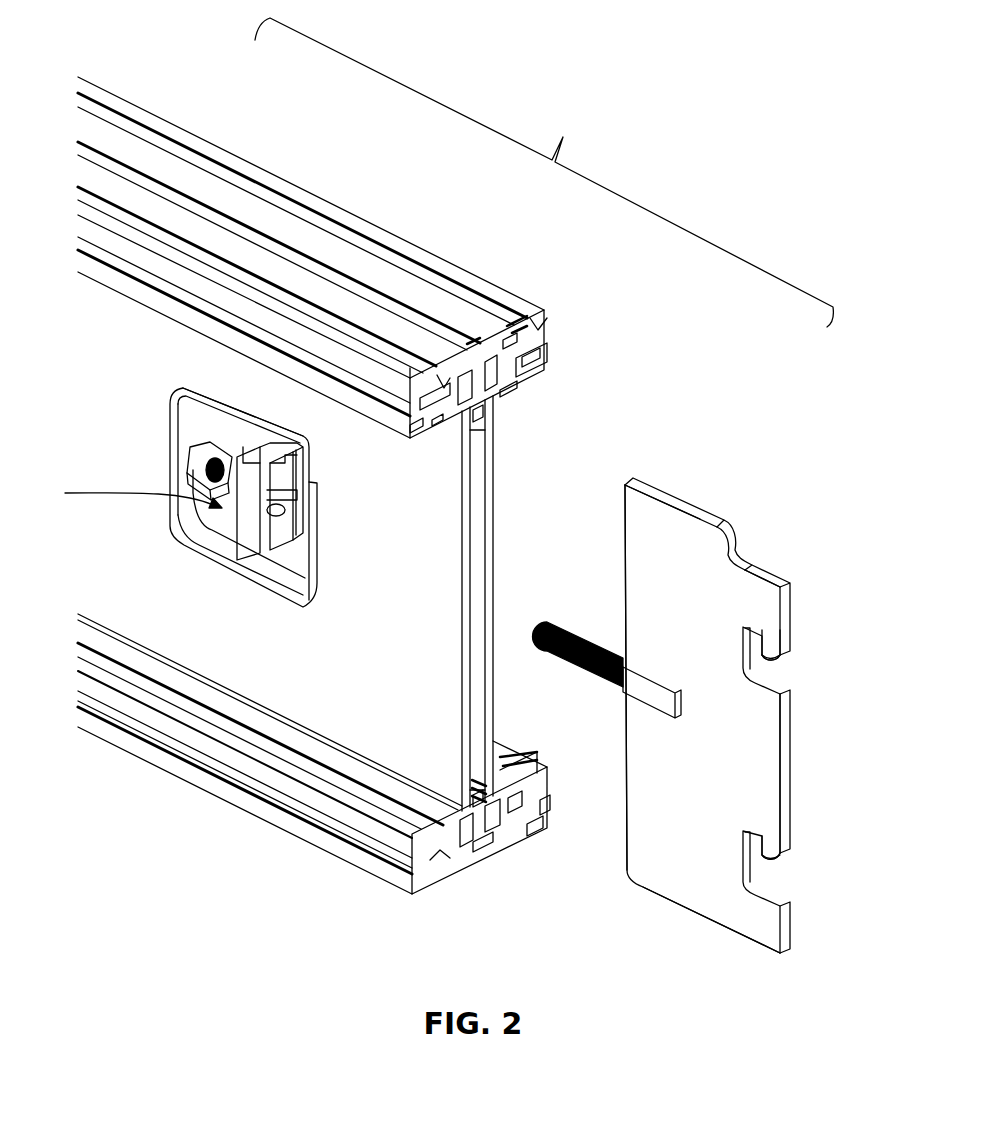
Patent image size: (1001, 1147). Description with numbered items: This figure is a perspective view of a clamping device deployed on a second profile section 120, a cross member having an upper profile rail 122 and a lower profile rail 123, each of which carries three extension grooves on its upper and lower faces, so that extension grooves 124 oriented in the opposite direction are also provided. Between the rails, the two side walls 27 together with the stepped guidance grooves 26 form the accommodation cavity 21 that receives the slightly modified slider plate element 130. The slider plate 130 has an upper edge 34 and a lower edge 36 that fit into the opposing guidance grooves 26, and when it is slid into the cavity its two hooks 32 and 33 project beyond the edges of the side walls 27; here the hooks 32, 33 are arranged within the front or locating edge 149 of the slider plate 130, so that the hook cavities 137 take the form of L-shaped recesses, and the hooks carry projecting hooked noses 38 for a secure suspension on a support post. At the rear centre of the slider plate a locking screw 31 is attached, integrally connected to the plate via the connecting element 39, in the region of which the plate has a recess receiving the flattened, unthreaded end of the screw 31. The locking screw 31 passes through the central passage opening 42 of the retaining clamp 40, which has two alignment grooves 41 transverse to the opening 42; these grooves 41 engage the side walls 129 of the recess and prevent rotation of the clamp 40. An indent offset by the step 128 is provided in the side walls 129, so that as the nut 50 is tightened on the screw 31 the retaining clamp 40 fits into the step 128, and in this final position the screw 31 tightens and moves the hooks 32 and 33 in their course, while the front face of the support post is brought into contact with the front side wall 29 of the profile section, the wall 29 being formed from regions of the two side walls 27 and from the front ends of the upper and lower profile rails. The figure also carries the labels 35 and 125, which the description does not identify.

The accommodation cavity 21 is at (482, 456).
The stepped guidance groove 26 is at (495, 404).
The side walls 27 is at (445, 580).
The front side wall 29 is at (500, 586).
The locking screw 31 is at (582, 668).
The hook 32 is at (773, 648).
The hook 33 is at (758, 857).
The upper edge 34 is at (698, 675).
The arm 35 is at (770, 575).
The lower edge 36 is at (700, 912).
The hooked noses 38 is at (773, 657).
The connecting element 39 is at (655, 692).
The retaining clamp 40 is at (245, 440).
The alignment grooves 41 is at (265, 443).
The passage opening 42 is at (195, 548).
The nut 50 is at (210, 442).
The second profile section 120 is at (260, 637).
The upper profile rail 122 is at (438, 302).
The lower profile rail 123 is at (392, 873).
The extension grooves 124 is at (375, 796).
The direction arrow 125 is at (119, 495).
The step 128 is at (312, 578).
The side walls of the recess 129 is at (272, 510).
The slider plate element 130 is at (650, 520).
The hook cavities 137 is at (750, 872).
The locating edge 149 is at (786, 777).